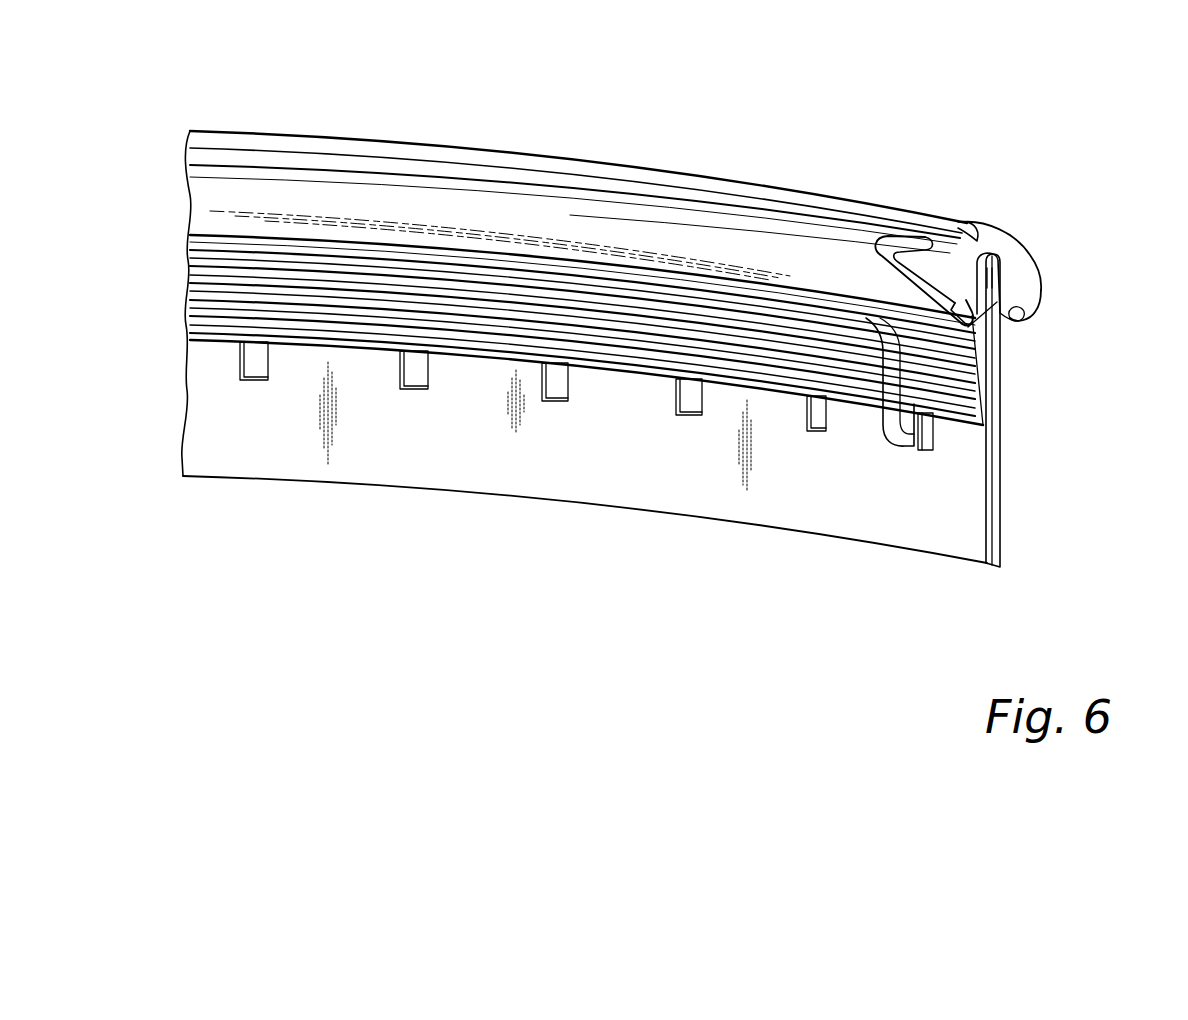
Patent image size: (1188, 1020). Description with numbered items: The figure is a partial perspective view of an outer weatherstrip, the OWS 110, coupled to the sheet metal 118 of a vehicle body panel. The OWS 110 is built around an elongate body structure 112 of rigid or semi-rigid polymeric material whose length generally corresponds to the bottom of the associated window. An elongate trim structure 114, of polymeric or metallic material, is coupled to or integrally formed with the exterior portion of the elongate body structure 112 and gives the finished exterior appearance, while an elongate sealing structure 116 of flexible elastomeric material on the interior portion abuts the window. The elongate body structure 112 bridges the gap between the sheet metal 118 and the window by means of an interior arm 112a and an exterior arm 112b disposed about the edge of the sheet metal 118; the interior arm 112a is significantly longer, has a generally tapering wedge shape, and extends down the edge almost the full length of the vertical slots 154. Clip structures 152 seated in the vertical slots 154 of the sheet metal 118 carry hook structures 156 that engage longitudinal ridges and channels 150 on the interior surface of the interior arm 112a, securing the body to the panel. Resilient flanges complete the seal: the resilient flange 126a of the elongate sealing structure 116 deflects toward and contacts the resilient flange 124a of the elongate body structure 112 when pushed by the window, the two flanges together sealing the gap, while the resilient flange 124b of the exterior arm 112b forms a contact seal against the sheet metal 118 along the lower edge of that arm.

The OWS 110 is at (722, 150).
The elongate body structure 112 is at (952, 282).
The interior arm 112a is at (950, 410).
The exterior arm 112b is at (1018, 293).
The elongate trim structure 114 is at (1030, 260).
The elongate sealing structure 116 is at (822, 250).
The sheet metal 118 is at (887, 550).
The resilient flange 124a is at (963, 226).
The resilient flange 124b is at (1023, 318).
The resilient flange 126a is at (900, 237).
The longitudinal ridges and channels 150 is at (977, 371).
The clip structures 152 is at (878, 433).
The vertical slots 154 is at (688, 417).
The hook structures 156 is at (912, 328).